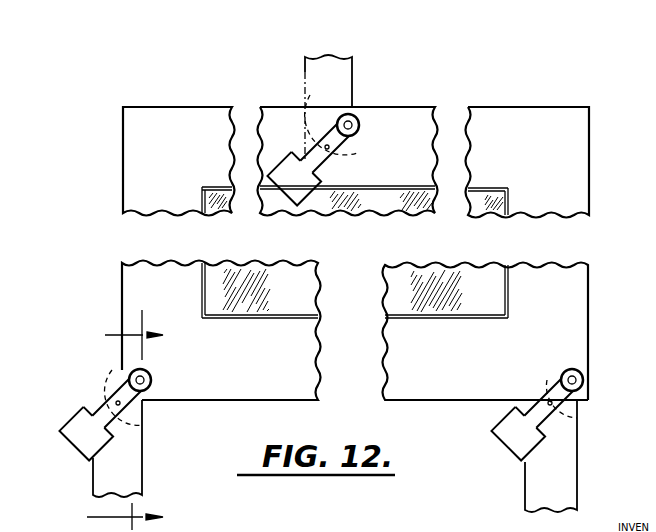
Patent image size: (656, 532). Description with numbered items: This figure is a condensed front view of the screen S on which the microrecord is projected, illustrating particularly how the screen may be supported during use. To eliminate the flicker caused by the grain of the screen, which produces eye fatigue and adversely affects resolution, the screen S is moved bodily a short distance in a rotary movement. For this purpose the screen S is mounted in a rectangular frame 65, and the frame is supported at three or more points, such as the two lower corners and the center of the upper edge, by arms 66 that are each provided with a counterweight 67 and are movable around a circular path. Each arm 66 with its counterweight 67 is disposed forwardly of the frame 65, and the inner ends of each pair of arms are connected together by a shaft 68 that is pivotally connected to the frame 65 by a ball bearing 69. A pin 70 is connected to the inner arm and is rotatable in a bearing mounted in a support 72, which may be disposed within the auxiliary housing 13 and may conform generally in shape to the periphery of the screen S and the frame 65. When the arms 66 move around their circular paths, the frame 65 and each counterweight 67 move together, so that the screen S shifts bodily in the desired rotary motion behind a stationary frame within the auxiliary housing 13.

The rectangular frame 65 is at (128, 157).
The arm 66 is at (350, 147).
The counterweight 67 is at (300, 152).
The shaft 68 is at (359, 125).
The ball bearing 69 is at (352, 114).
The pin 70 is at (592, 418).
The support 72 is at (305, 67).
The auxiliary housing 13 is at (139, 421).
The screen S is at (378, 222).